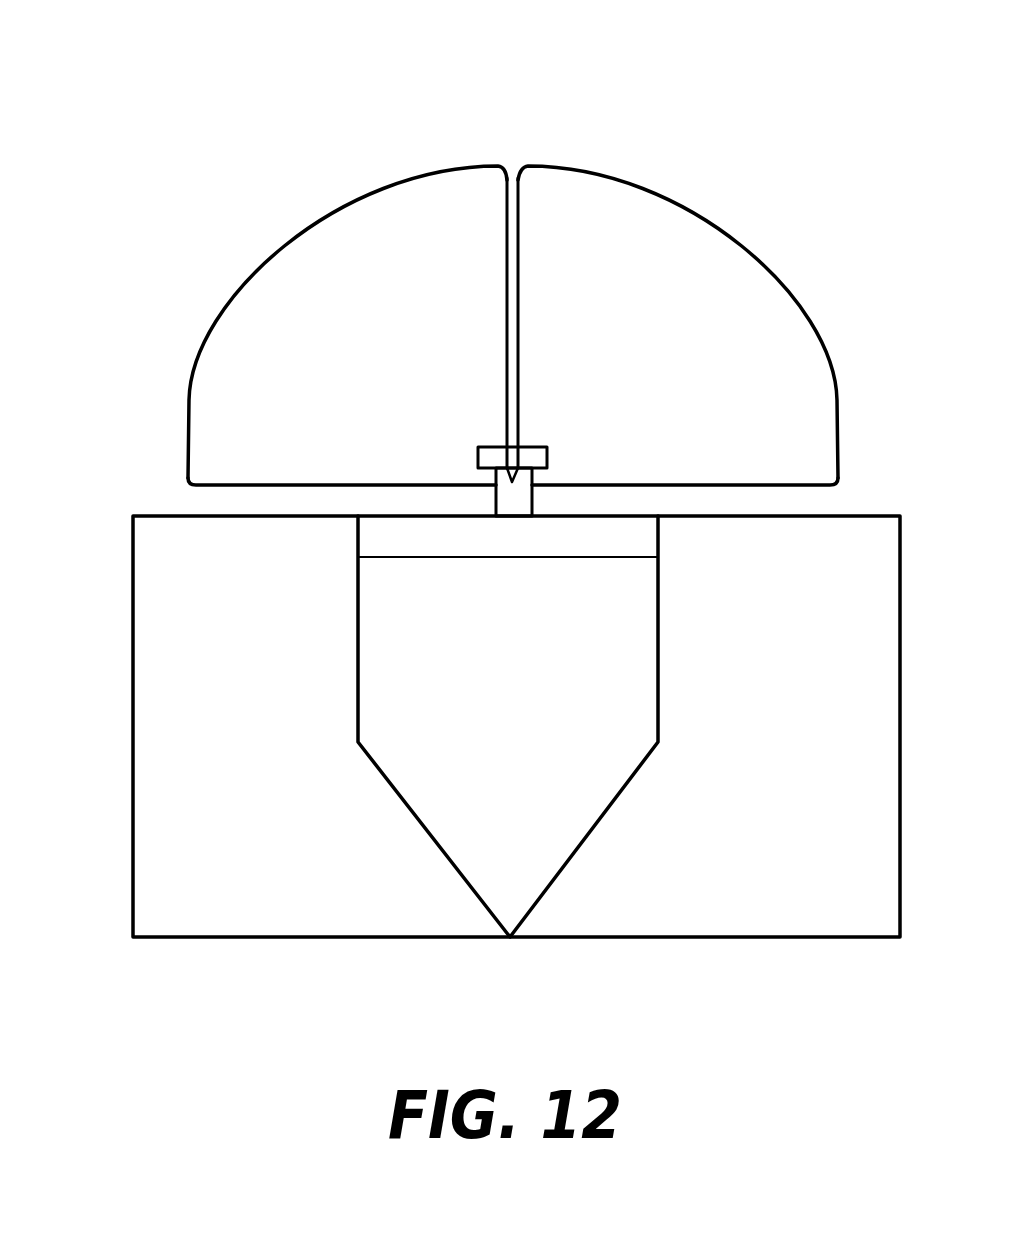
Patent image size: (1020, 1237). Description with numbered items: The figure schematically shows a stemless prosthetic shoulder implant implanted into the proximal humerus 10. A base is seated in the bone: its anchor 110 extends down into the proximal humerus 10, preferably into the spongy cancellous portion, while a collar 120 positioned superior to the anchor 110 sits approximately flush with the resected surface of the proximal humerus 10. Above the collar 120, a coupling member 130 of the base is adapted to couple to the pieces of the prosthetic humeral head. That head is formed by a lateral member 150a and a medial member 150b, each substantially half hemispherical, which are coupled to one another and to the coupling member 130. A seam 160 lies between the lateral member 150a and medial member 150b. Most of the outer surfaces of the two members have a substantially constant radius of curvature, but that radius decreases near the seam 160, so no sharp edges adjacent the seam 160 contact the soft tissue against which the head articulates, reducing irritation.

The proximal humerus 10 is at (155, 705).
The anchor 110 is at (428, 656).
The collar 120 is at (428, 542).
The coupling member 130 is at (512, 498).
The lateral member 150a is at (400, 320).
The medial member 150b is at (642, 318).
The seam 160 is at (512, 145).